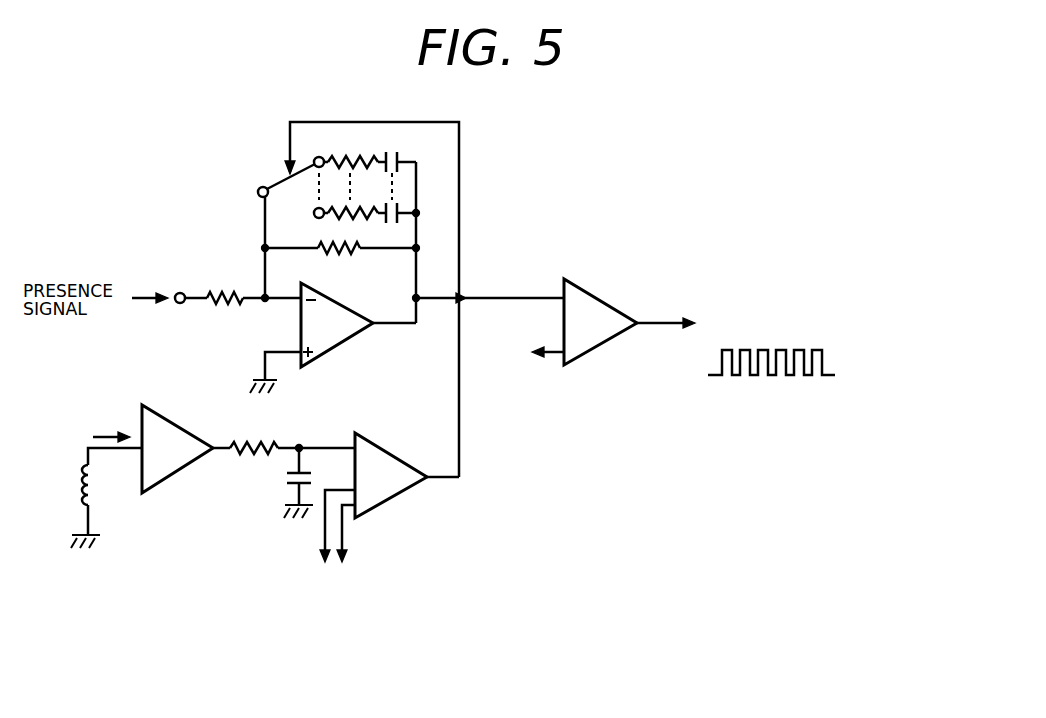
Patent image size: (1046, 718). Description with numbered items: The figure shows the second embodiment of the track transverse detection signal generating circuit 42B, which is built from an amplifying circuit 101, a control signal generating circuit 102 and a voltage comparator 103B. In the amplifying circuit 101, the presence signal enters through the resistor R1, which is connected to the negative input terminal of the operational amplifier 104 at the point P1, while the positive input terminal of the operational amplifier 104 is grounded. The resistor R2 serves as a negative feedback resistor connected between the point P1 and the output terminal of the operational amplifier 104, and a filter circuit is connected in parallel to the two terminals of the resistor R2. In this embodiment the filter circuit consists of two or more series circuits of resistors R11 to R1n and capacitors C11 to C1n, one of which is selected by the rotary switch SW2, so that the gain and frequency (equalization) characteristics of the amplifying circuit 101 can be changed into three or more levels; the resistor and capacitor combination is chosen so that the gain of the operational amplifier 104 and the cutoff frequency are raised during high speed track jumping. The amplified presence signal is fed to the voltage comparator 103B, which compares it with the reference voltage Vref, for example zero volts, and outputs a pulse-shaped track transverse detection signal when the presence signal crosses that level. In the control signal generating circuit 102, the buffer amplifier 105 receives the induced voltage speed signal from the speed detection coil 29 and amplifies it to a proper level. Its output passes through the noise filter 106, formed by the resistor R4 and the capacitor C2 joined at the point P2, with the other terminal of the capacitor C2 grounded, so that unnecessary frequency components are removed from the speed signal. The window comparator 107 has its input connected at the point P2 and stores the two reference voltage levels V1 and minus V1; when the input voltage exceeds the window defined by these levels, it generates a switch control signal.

The track transverse detection signal generating circuit 42B is at (662, 207).
The amplifying circuit 101 is at (202, 208).
The control signal generating circuit 102 is at (179, 568).
The voltage comparator 103B is at (607, 305).
The operational amplifier 104 is at (342, 345).
The buffer amplifier 105 is at (178, 425).
The noise filter 106 is at (258, 490).
The window comparator 107 is at (403, 457).
The speed detection coil 29 is at (80, 490).
The rotary switch SW2 is at (272, 178).
The resistor R1 is at (228, 290).
The resistor R1n is at (356, 157).
The capacitor C1n is at (392, 152).
The resistor R11 is at (342, 218).
The capacitor C11 is at (396, 222).
The negative feedback resistor R2 is at (340, 255).
The point P1 is at (263, 303).
The point P2 is at (302, 445).
The resistor R4 is at (244, 432).
The capacitor C2 is at (312, 476).
The reference voltage level V1 is at (333, 541).
The reference voltage Vref is at (519, 369).